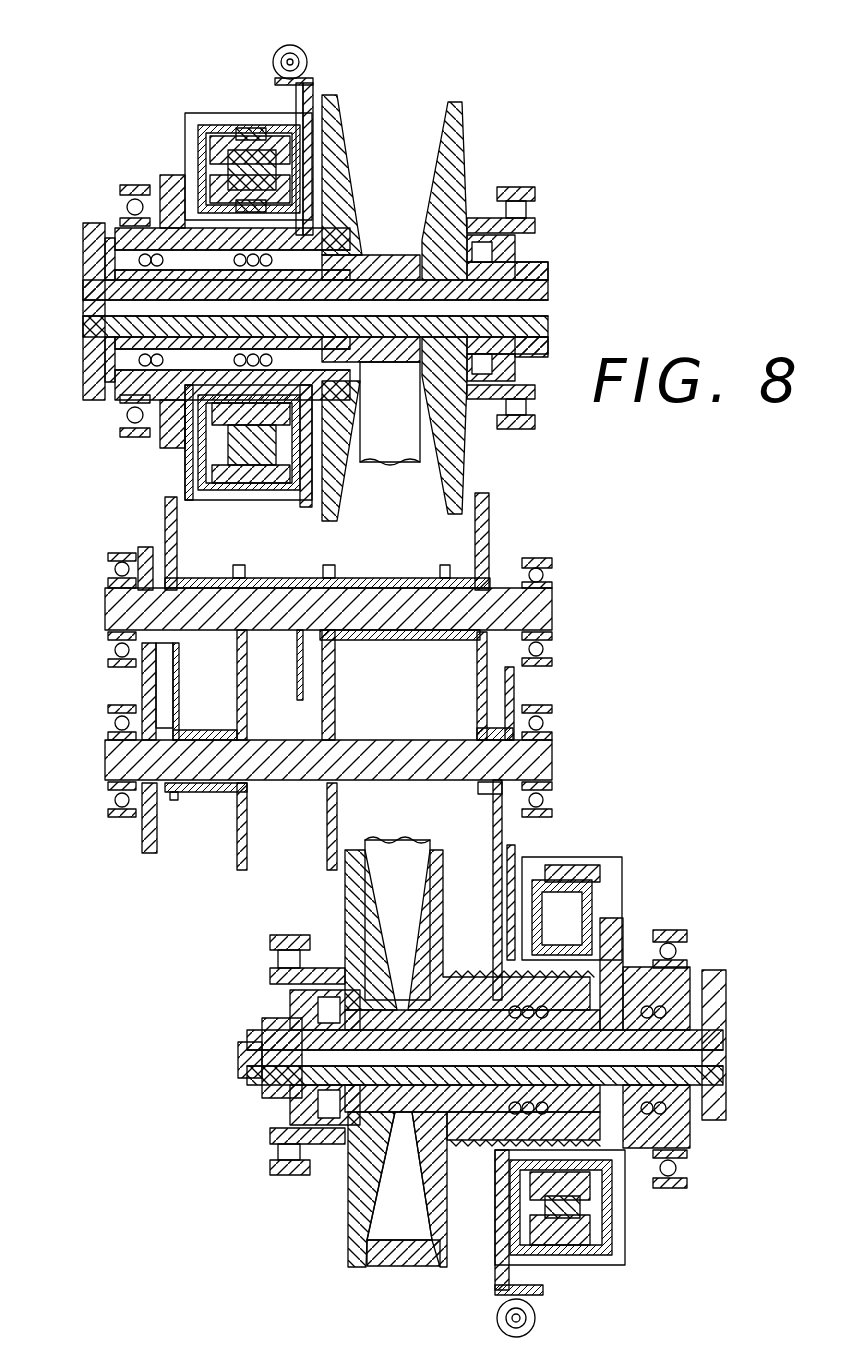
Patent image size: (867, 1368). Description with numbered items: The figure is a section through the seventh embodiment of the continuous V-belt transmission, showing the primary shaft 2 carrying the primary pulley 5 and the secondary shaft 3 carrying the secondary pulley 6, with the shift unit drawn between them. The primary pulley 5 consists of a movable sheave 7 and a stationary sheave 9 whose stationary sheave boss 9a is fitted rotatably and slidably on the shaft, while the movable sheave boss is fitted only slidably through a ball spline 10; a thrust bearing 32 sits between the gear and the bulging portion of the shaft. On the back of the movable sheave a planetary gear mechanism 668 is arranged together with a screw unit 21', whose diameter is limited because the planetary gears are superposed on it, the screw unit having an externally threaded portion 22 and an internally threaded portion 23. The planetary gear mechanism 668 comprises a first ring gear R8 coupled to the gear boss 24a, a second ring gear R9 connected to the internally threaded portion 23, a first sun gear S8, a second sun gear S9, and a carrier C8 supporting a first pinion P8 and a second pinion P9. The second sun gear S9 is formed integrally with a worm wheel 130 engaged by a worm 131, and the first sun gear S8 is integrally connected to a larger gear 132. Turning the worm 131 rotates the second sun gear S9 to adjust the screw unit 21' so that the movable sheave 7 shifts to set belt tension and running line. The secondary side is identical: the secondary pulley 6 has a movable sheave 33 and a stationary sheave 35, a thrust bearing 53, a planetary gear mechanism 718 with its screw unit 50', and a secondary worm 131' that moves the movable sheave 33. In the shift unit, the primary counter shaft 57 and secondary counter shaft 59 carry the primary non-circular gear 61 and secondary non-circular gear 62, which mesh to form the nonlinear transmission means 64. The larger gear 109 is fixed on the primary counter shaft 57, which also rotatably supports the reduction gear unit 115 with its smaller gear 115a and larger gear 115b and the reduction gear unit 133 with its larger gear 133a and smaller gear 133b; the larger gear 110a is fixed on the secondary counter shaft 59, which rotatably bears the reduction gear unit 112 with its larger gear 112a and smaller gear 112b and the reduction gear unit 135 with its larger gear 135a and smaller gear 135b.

The primary shaft 2 is at (550, 290).
The secondary shaft 3 is at (725, 1052).
The primary pulley 5 is at (430, 98).
The secondary pulley 6 is at (397, 1290).
The movable sheave 7 is at (338, 150).
The stationary sheave 9 is at (460, 125).
The stationary sheave boss 9a is at (90, 300).
The ball spline 10 is at (120, 235).
The externally threaded portion 22 is at (125, 398).
The internally threaded portion 23 is at (143, 440).
The gear boss 24a is at (120, 205).
The thrust bearing 32 is at (88, 383).
The movable sheave 33 is at (443, 1268).
The stationary sheave 35 is at (346, 1225).
The screw unit 50' is at (525, 1103).
The thrust bearing 53 is at (698, 1135).
The primary counter shaft 57 is at (552, 615).
The secondary counter shaft 59 is at (552, 766).
The primary non-circular gear 61 is at (142, 690).
The secondary non-circular gear 62 is at (142, 845).
The nonlinear transmission means 64 is at (98, 708).
The planetary gear mechanism 668 is at (160, 53).
The planetary gear mechanism 718 is at (640, 855).
The larger gear 109 is at (165, 528).
The larger gear 110a is at (336, 705).
The reduction gear unit 112 is at (396, 578).
The larger gear 112a is at (488, 517).
The smaller gear 112b is at (337, 642).
The reduction gear unit 115 is at (205, 795).
The smaller gear 115a is at (177, 798).
The larger gear 115b is at (246, 852).
The worm wheel 130 is at (313, 92).
The worm 131 is at (251, 51).
The secondary worm 131' is at (568, 1243).
The larger gear 132 is at (312, 507).
The reduction gear unit 133 is at (262, 634).
The larger gear 133a is at (299, 696).
The smaller gear 133b is at (234, 645).
The reduction gear unit 135 is at (495, 805).
The larger gear 135a is at (514, 700).
The smaller gear 135b is at (478, 735).
The carrier C8 is at (318, 115).
The first pinion P8 is at (178, 178).
The second pinion P9 is at (196, 138).
The first ring gear R8 is at (283, 125).
The second ring gear R9 is at (240, 125).
The first sun gear S8 is at (270, 492).
The second sun gear S9 is at (230, 488).
The screw unit 21' is at (200, 445).